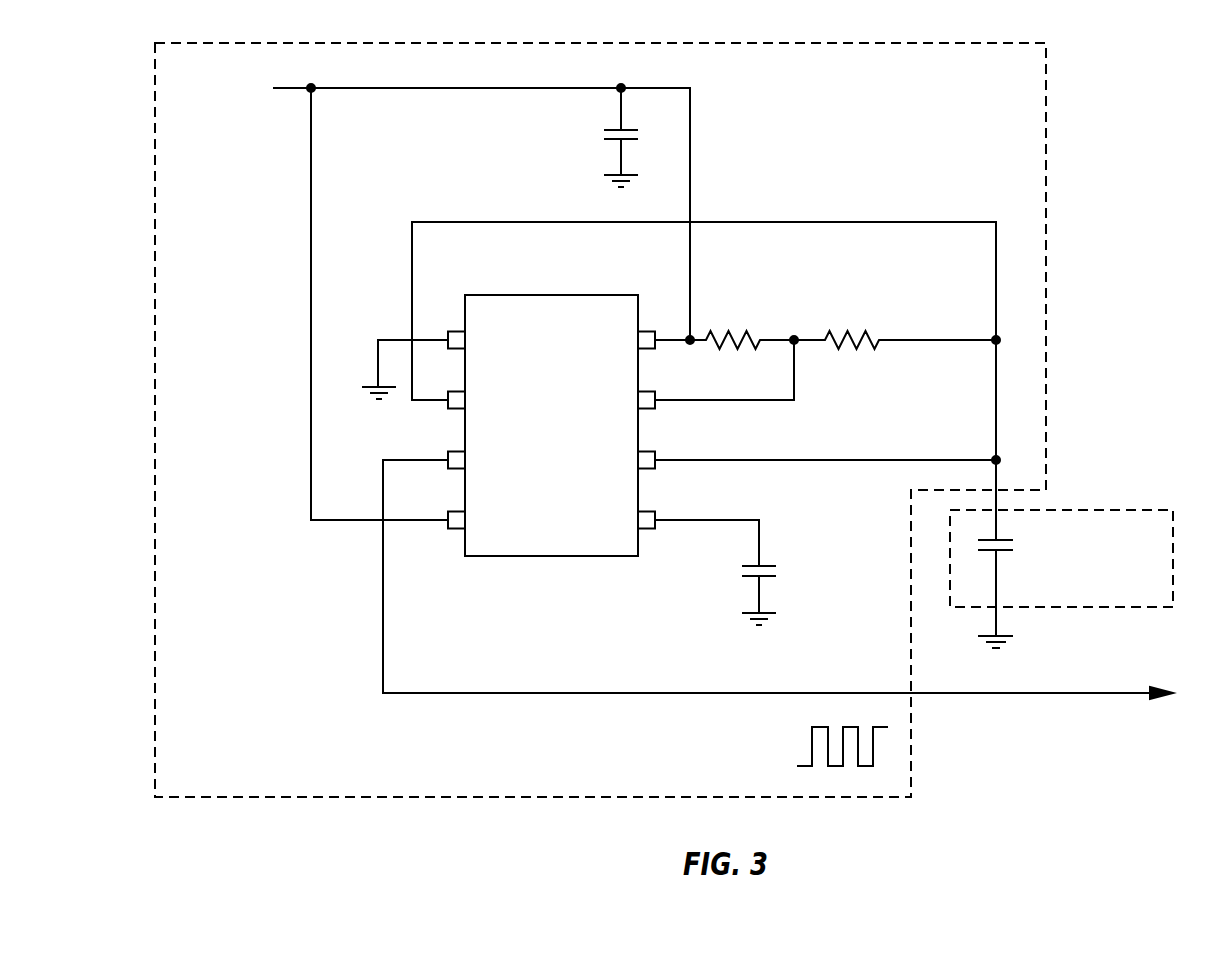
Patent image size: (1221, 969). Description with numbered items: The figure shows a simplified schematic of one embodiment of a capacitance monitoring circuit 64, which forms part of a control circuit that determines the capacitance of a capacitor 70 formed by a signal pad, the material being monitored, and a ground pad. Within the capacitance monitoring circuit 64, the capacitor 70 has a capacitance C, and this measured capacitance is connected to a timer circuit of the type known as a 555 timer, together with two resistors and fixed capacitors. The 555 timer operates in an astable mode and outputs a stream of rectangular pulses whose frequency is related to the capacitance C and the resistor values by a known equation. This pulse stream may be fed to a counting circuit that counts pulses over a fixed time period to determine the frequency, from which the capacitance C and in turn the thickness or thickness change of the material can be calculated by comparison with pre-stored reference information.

The capacitance monitoring circuit 64 is at (1046, 122).
The capacitor 70 is at (1115, 607).
The 555 timer 555 is at (551, 425).